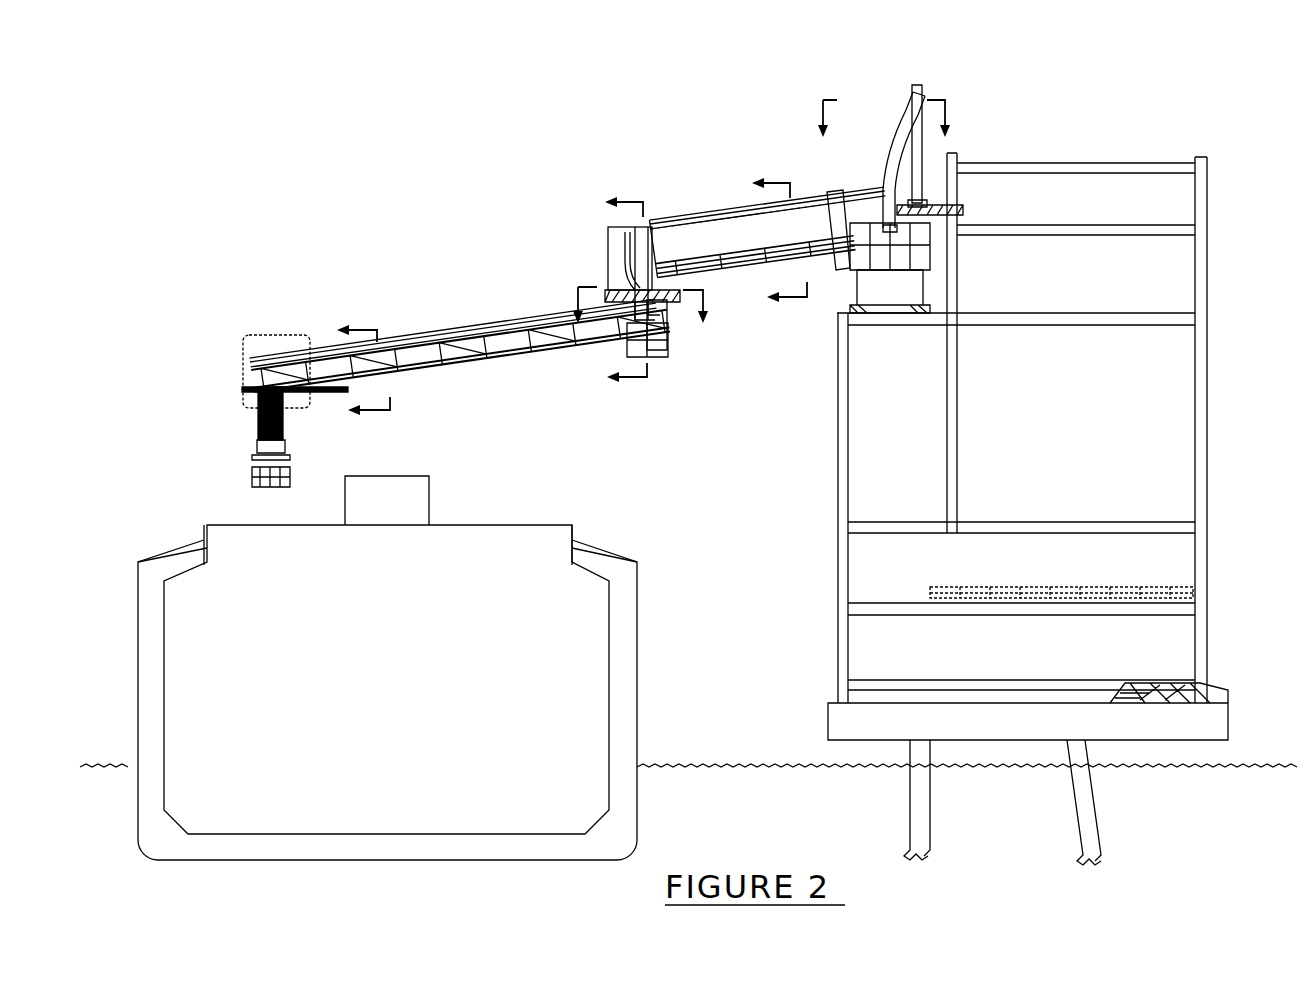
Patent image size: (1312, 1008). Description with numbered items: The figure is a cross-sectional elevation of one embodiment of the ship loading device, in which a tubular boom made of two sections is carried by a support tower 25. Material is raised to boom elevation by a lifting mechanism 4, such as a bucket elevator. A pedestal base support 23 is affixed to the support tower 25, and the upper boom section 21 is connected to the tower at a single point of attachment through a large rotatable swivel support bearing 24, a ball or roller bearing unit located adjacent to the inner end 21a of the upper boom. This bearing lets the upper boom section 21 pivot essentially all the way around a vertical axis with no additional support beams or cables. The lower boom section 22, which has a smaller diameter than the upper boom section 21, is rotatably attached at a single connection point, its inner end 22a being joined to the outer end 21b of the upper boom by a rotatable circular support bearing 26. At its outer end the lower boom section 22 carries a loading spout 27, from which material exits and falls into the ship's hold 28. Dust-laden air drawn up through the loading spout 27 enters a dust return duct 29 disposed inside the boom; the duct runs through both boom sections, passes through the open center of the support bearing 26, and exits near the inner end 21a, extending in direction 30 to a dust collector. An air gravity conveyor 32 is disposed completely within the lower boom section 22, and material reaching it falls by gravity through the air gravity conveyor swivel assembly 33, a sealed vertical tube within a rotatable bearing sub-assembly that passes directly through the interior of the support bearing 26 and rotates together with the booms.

The lifting mechanism 4 is at (320, 282).
The upper boom section 21 is at (747, 208).
The inner end of upper boom 21a is at (822, 195).
The outer end of upper boom 21b is at (607, 242).
The lower boom section 22 is at (470, 320).
The inner end of lower boom 22a is at (652, 348).
The pedestal base support 23 is at (840, 495).
The rotatable swivel support bearing 24 is at (930, 307).
The support tower 25 is at (1210, 222).
The rotatable circular support bearing 26 is at (673, 298).
The loading spout 27 is at (255, 443).
The ship's hold 28 is at (135, 690).
The dust return duct 29 is at (530, 320).
The direction 30 is at (927, 73).
The air gravity conveyor 32 is at (473, 357).
The air gravity conveyor swivel assembly 33 is at (638, 247).